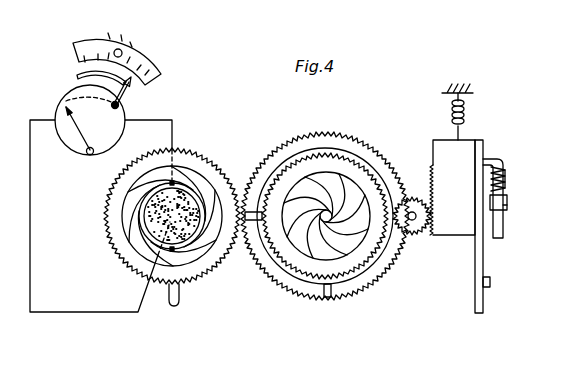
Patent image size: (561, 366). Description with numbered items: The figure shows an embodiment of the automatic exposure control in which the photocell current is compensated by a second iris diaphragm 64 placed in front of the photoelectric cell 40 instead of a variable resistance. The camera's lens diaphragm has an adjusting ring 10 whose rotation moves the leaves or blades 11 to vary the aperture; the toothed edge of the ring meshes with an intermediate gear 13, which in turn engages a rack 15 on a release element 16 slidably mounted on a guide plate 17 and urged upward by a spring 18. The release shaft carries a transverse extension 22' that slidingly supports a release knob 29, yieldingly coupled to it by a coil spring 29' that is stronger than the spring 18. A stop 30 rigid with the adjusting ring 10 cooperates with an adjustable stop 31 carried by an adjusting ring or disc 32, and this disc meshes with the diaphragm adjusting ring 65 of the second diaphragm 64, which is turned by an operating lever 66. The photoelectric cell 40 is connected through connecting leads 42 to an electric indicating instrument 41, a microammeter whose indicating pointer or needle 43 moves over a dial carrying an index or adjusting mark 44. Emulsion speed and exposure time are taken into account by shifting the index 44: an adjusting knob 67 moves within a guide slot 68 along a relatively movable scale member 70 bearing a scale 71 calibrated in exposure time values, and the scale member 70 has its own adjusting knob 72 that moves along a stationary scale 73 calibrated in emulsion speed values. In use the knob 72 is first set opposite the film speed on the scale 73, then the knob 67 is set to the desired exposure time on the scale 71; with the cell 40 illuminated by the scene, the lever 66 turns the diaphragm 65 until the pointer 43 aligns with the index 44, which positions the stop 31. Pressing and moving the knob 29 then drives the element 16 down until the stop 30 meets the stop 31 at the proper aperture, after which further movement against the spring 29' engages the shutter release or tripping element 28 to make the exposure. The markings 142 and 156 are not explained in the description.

The adjusting ring 10 is at (366, 177).
The leaves or blades 11 is at (326, 216).
The intermediate gear 13 is at (415, 238).
The rack 15 is at (433, 185).
The release element 16 is at (455, 226).
The guide plate 17 is at (480, 150).
The spring 18 is at (465, 122).
The transverse extension 22' is at (506, 206).
The shutter release or tripping element 28 is at (491, 280).
The release knob 29 is at (512, 201).
The coil spring 29' is at (514, 175).
The stop or projection 30 is at (250, 222).
The adjustable stop 31 is at (327, 298).
The adjusting ring or disc 32 is at (369, 285).
The photoelectric cell 40 is at (152, 219).
The electric indicating instrument 41 is at (84, 153).
The connecting leads 42 is at (88, 311).
The indicating pointer or needle 43 is at (77, 135).
The index or adjusting mark 44 is at (119, 106).
The second iris diaphragm 64 is at (206, 188).
The diaphragm adjusting ring 65 is at (193, 151).
The operating lever 66 is at (176, 306).
The adjusting knob 67 is at (134, 87).
The guide slot 68 is at (92, 80).
The scale member 70 is at (160, 70).
The scale 71 is at (83, 61).
The adjusting knob 72 is at (122, 50).
The stationary scale 73 is at (110, 33).
The coil lead 142 is at (533, 170).
The armature contact 156 is at (532, 214).